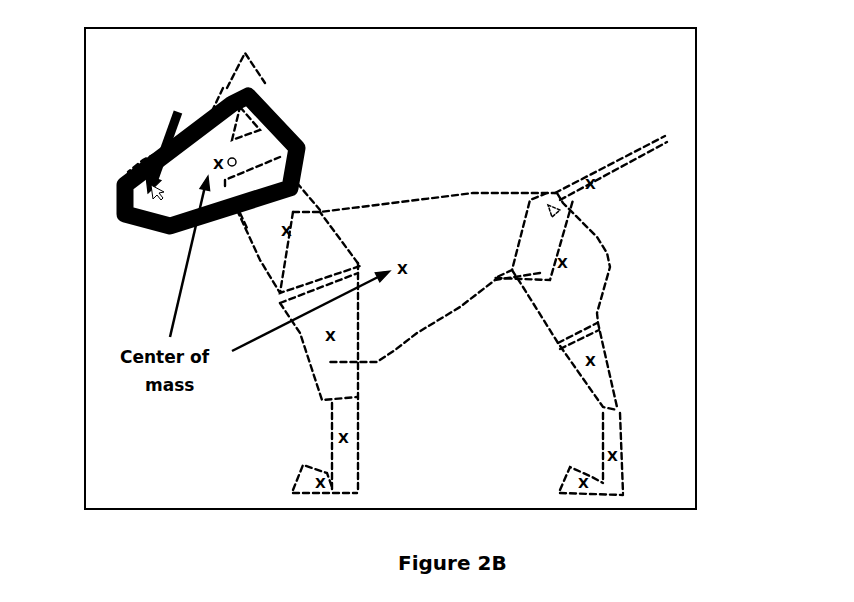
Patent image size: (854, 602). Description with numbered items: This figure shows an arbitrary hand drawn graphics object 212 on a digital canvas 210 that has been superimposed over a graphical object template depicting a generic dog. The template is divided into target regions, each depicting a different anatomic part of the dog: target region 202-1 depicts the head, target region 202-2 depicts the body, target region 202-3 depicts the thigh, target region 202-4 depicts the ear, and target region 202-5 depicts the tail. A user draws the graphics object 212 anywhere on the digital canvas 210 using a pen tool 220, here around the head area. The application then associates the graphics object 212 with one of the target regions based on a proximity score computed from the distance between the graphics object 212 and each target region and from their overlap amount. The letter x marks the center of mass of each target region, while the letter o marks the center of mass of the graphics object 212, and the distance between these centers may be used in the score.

The digital canvas 210 is at (697, 258).
The pen tool 220 is at (160, 127).
The graphics object 212 is at (170, 231).
The target region 202-1 is at (192, 130).
The target region 202-2 is at (470, 193).
The target region 202-3 is at (600, 243).
The target region 202-4 is at (245, 53).
The target region 202-5 is at (665, 138).